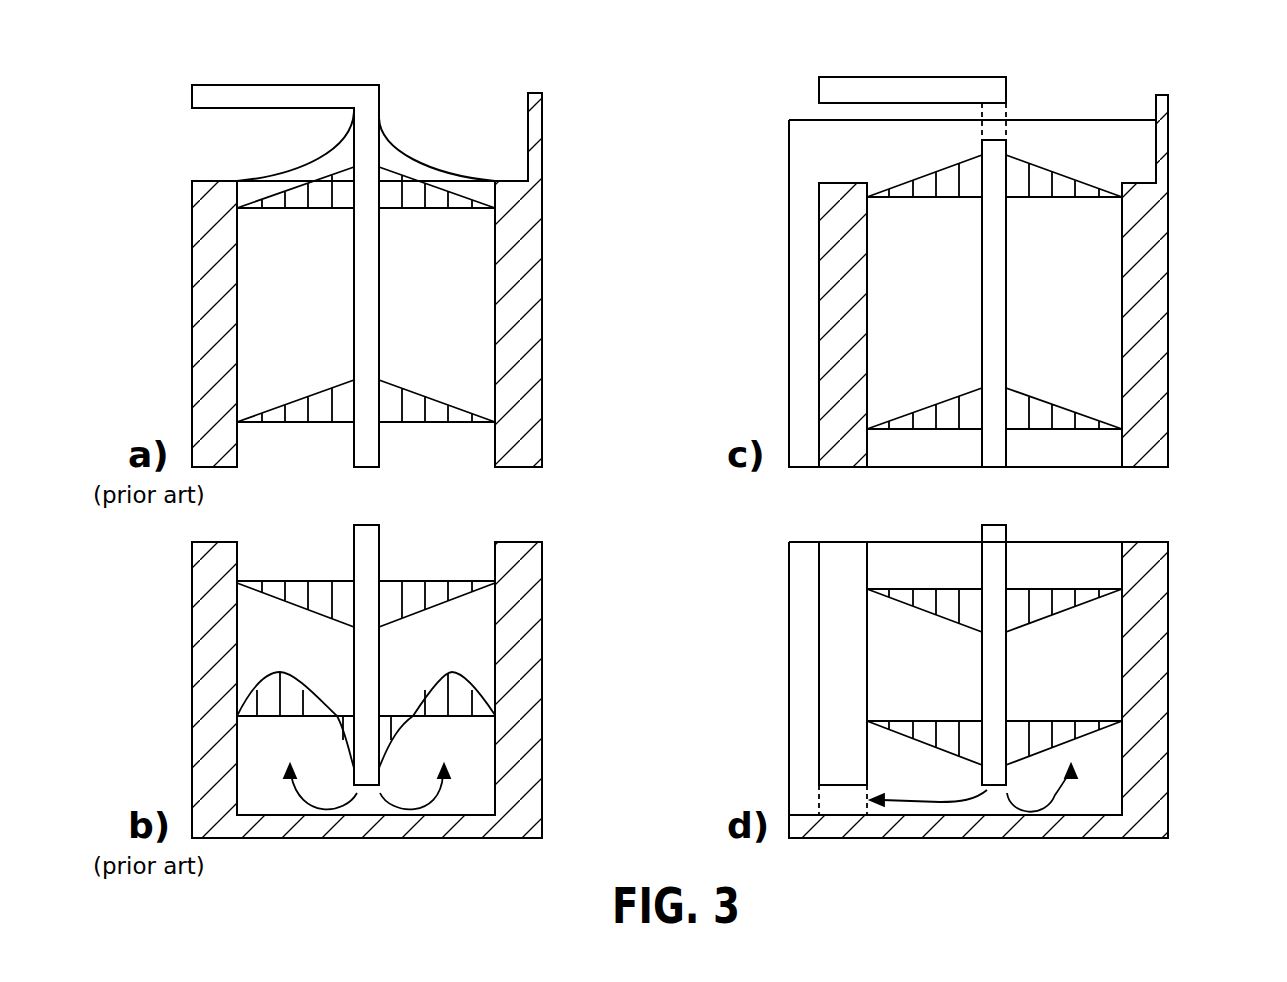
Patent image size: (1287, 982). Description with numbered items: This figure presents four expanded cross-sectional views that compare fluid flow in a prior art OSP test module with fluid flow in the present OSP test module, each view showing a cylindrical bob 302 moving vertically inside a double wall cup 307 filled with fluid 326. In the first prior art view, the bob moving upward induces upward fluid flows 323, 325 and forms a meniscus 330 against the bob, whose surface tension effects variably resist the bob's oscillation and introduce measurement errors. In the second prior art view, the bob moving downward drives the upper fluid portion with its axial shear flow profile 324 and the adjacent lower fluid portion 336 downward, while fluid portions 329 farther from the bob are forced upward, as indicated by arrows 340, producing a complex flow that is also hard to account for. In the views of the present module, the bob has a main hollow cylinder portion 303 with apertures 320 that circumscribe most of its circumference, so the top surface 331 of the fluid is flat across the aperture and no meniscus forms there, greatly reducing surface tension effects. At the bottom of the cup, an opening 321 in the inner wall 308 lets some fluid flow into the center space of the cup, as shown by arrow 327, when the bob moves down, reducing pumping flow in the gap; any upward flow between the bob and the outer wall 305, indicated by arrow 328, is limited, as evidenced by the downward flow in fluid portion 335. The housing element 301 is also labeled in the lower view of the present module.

The housing 301 is at (1153, 590).
The cylindrical bob 302 is at (298, 88).
The main hollow cylinder portion 303 is at (995, 302).
The outer wall 305 is at (1153, 787).
The double wall cup 307 is at (543, 237).
The inner wall 308 is at (835, 748).
The apertures 320 is at (995, 110).
The opening 321 is at (842, 803).
The upward fluid flow 323 is at (403, 408).
The axial shear flow profile 324 is at (400, 592).
The upward fluid flow 325 is at (425, 198).
The fluid 326 is at (290, 287).
The arrow 327 is at (940, 800).
The arrow 328 is at (1073, 793).
The fluid portions 329 is at (413, 702).
The meniscus 330 is at (407, 158).
The top surface 331 is at (905, 120).
The fluid portion 335 is at (1010, 763).
The fluid portion 336 is at (343, 737).
The arrows 340 is at (440, 797).